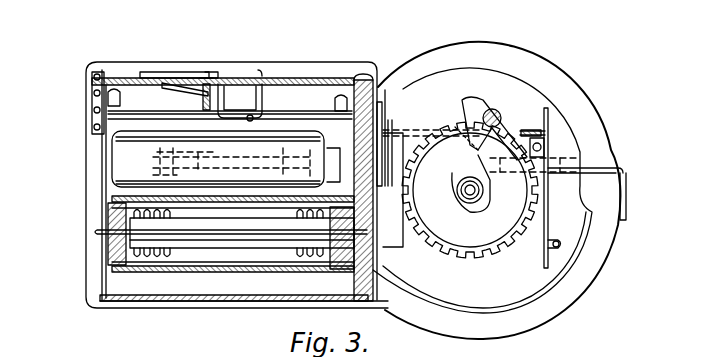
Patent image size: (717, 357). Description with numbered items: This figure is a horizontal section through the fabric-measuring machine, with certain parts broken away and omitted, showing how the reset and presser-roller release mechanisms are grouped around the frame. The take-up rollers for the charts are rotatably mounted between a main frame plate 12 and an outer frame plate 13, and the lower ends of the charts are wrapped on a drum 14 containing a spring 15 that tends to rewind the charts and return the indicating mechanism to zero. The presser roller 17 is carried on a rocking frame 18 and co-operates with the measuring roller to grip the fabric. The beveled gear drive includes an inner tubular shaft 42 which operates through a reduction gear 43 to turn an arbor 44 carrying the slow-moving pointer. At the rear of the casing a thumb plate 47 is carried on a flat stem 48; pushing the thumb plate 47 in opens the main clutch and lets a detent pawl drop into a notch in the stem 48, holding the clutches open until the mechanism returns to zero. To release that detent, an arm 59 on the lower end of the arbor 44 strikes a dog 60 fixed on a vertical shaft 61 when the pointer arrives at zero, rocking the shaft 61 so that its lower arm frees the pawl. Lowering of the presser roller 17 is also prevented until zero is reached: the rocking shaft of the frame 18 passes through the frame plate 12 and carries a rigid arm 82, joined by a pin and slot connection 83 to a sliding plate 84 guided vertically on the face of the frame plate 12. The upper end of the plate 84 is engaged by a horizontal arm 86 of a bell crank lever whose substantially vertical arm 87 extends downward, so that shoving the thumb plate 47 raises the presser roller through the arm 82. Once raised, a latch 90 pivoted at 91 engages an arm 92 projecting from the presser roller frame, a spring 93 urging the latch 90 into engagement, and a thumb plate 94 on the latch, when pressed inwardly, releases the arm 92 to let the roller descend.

The main frame plate 12 is at (373, 294).
The outer frame plate 13 is at (110, 265).
The drum 14 is at (194, 272).
The spring 15 is at (156, 253).
The presser roller 17 is at (127, 172).
The rocking frame 18 is at (378, 104).
The inner tubular shaft 42 is at (458, 205).
The reduction gear 43 is at (453, 254).
The arbor 44 is at (463, 197).
The thumb plate 47 is at (627, 201).
The flat stem 48 is at (600, 170).
The arm 59 is at (489, 193).
The dog 60 is at (458, 128).
The vertical shaft 61 is at (497, 110).
The rigid arm 82 is at (395, 100).
The pin and slot connection 83 is at (386, 176).
The sliding plate 84 is at (386, 125).
The horizontal arm 86 is at (480, 152).
The vertical arm 87 is at (240, 352).
The latch 90 is at (244, 96).
The pivot 91 is at (252, 124).
The arm 92 is at (260, 72).
The spring 93 is at (208, 84).
The thumb plate 94 is at (166, 93).